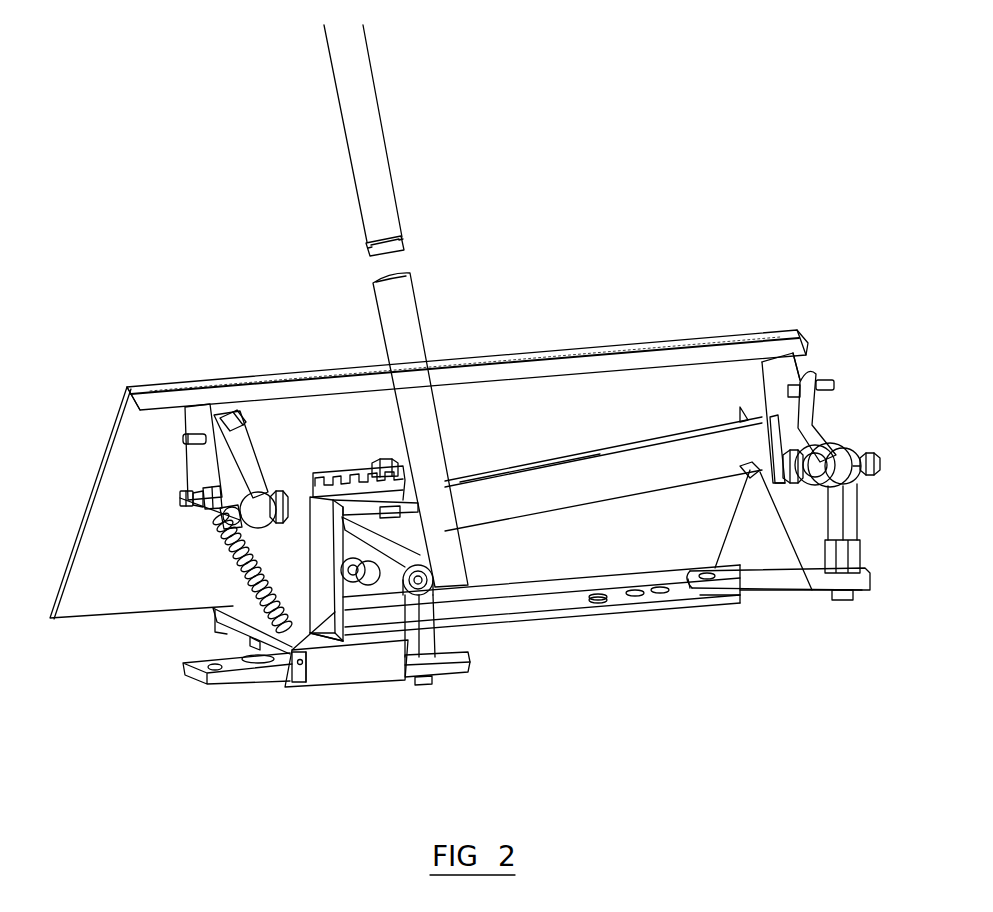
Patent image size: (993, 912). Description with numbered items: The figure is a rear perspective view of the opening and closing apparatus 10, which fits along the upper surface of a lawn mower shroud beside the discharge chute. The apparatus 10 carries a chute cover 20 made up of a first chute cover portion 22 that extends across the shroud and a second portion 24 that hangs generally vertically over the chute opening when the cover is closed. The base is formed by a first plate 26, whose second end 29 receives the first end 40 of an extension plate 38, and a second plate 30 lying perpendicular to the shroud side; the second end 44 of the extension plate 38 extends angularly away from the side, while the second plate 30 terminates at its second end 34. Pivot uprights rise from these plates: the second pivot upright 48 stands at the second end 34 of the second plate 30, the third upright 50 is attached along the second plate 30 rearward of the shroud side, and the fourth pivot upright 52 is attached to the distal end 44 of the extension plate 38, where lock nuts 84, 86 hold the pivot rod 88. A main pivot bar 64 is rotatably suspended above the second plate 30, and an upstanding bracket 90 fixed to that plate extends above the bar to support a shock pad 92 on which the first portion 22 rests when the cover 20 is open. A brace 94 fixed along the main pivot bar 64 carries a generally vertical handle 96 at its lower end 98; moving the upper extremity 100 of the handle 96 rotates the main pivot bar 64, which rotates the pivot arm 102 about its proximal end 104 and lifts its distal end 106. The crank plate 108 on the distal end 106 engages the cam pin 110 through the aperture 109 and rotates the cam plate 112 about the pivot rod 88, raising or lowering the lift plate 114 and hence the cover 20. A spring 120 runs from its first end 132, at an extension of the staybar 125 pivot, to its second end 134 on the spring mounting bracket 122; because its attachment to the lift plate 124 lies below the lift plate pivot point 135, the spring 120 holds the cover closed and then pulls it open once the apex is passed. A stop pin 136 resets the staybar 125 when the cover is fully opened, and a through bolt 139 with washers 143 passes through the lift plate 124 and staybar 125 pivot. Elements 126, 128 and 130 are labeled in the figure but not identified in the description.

The opening and closing apparatus 10 is at (607, 292).
The chute cover 20 is at (150, 364).
The first chute cover portion 22 is at (308, 385).
The second portion 24 is at (90, 487).
The first plate 26 is at (525, 598).
The second end of first plate 29 is at (733, 598).
The second plate 30 is at (363, 630).
The second end of second plate 34 is at (452, 657).
The extension plate 38 is at (778, 585).
The first end of extension plate 40 is at (704, 583).
The second end of extension plate 44 is at (852, 590).
The second pivot upright 48 is at (445, 545).
The third pivot upright 50 is at (264, 498).
The fourth pivot upright 52 is at (870, 468).
The main pivot bar 64 is at (410, 478).
The lock nut 84 is at (845, 470).
The lock nut 86 is at (876, 478).
The pivot rod 88 is at (880, 470).
The upstanding bracket 90 is at (323, 612).
The shock pad 92 is at (358, 470).
The brace 94 is at (412, 540).
The handle 96 is at (407, 357).
The proximal lower end of handle 98 is at (445, 565).
The upper distal extremity of handle 100 is at (365, 145).
The pivot arm 102 is at (550, 492).
The proximal end of pivot arm 104 is at (268, 657).
The distal end of pivot arm 106 is at (745, 447).
The crank plate 108 is at (852, 535).
The aperture 109 is at (812, 590).
The cam pin 110 is at (750, 470).
The cam plate 112 is at (817, 383).
The lift plate 114 is at (785, 365).
The spring 120 is at (220, 612).
The spring mounting bracket 122 is at (308, 688).
The lift plate 124 is at (217, 468).
The staybar 125 is at (228, 413).
The guide plate 126 is at (187, 412).
The spring 128 is at (222, 552).
The pin 130 is at (837, 388).
The first end of spring 132 is at (213, 515).
The second end of spring 134 is at (306, 656).
The lift plate pivot point 135 is at (218, 522).
The stop pin 136 is at (183, 438).
The through bolt 139 is at (178, 500).
The washers 143 is at (213, 513).